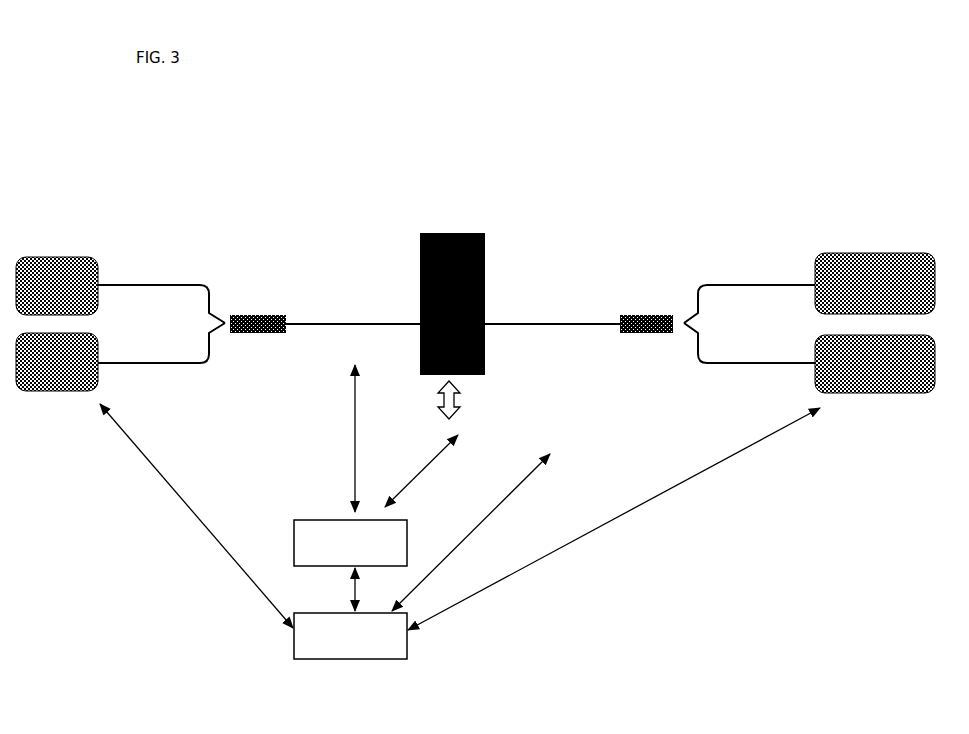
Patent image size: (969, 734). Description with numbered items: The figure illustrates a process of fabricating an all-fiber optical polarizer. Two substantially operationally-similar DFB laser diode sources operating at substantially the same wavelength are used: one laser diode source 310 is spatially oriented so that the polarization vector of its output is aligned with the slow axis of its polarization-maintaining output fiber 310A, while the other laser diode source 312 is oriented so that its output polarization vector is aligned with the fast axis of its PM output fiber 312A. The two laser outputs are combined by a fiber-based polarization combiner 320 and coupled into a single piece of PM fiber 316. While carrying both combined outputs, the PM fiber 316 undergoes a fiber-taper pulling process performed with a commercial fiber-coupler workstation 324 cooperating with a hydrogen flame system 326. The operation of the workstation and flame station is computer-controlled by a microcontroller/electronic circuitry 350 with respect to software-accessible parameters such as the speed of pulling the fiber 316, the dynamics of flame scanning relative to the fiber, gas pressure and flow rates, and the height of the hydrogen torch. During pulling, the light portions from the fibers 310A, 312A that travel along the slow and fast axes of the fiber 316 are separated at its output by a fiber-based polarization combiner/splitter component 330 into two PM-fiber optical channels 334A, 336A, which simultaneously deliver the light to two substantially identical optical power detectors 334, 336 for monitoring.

The DFB laser diode source 310 is at (69, 259).
The laser diode source 312 is at (38, 389).
The polarization-maintaining output fiber 310A is at (161, 293).
The PM output fiber 312A is at (161, 359).
The PM fiber 316 is at (370, 318).
The fiber-based polarization combiner 320 is at (288, 304).
The fiber-coupler workstation 324 is at (376, 465).
The hydrogen flame system 326 is at (514, 346).
The fiber-based polarization combiner/splitter component 330 is at (641, 304).
The optical power detector 334 is at (875, 272).
The optical power detector 336 is at (875, 374).
The PM-fiber optical channel 334A is at (749, 293).
The PM-fiber optical channel 336A is at (749, 359).
The microcontroller/electronic circuitry 350 is at (460, 531).